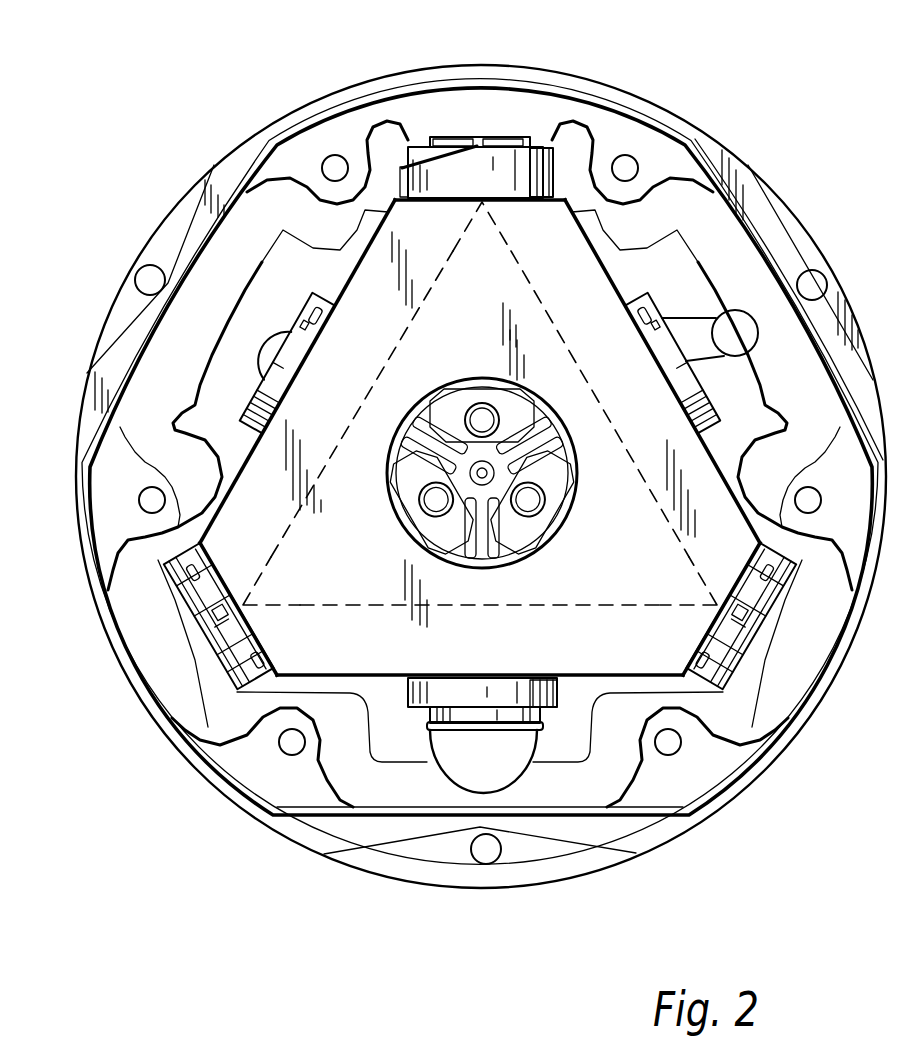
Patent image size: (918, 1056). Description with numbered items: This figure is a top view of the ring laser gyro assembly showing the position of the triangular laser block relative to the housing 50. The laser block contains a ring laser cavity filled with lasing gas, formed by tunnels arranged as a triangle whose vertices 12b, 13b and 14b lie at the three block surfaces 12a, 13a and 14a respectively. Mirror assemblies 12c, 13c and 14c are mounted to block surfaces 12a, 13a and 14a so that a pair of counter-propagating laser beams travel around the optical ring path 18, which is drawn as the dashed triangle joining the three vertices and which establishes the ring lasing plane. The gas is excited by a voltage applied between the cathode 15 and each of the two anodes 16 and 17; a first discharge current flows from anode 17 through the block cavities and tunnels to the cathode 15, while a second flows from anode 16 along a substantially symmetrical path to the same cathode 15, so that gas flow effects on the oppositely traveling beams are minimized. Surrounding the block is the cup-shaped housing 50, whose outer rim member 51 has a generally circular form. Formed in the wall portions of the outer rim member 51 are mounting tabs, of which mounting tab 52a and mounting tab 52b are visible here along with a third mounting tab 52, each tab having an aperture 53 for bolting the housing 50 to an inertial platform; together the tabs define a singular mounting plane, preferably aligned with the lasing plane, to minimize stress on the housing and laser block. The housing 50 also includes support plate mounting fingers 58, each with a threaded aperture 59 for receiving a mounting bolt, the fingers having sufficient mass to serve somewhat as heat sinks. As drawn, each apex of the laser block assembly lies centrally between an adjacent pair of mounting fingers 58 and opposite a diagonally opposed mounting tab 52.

The block surface 12a is at (538, 200).
The vertex 12b is at (482, 204).
The mirror assembly 12c is at (418, 172).
The block surface 13a is at (214, 565).
The vertex 13b is at (249, 600).
The mirror assembly 13c is at (210, 530).
The block surface 14a is at (743, 567).
The vertex 14b is at (711, 603).
The mirror assembly 14c is at (718, 650).
The cathode 15 is at (537, 773).
The anode 16 is at (292, 393).
The anode 17 is at (662, 373).
The optical ring path 18 is at (408, 320).
The housing 50 is at (481, 450).
The outer rim member 51 is at (561, 74).
The mounting tab 52 is at (788, 234).
The mounting tab 52a is at (188, 207).
The mounting tab 52b is at (557, 860).
The aperture 53 is at (150, 280).
The support plate mounting finger 58 is at (635, 130).
The threaded aperture 59 is at (622, 170).